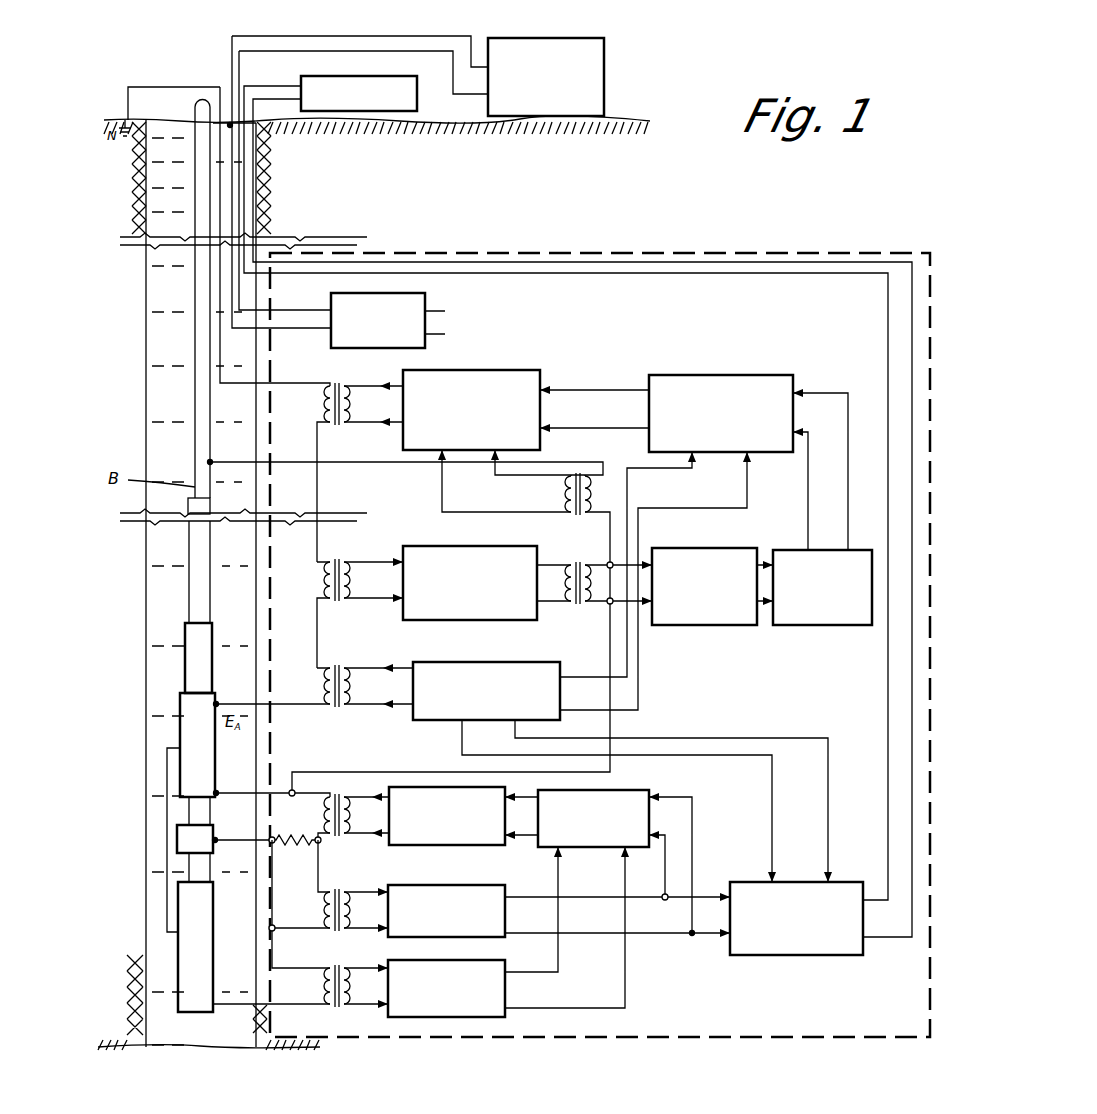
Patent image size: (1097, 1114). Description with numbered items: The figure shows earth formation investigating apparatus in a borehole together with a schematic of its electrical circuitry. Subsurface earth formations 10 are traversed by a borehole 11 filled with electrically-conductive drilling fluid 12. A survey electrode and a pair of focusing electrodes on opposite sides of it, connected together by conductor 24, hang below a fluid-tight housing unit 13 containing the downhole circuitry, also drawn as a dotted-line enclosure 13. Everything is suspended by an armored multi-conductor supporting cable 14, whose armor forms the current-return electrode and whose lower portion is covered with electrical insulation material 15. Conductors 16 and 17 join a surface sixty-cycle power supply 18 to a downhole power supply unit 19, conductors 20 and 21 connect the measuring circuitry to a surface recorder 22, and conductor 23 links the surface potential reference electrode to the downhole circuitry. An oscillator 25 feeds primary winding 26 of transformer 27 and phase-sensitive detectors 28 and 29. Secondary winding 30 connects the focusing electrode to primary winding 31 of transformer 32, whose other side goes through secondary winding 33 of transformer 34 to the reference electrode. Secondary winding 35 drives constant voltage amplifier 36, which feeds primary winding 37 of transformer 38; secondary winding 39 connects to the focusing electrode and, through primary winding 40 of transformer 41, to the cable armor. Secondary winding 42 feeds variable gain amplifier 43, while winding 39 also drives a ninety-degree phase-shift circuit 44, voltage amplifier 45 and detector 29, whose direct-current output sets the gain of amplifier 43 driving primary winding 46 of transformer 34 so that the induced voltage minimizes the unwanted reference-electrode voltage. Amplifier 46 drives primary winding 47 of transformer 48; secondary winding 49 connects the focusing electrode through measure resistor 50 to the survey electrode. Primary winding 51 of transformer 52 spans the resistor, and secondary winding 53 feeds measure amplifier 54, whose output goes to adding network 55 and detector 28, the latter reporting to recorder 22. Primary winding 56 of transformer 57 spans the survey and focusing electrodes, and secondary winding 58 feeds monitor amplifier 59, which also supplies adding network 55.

The subsurface earth formations 10 is at (302, 228).
The borehole 11 is at (146, 214).
The drilling fluid 12 is at (183, 340).
The fluid-tight housing unit 13 is at (633, 252).
The armored multi-conductor supporting cable 14 is at (195, 415).
The electrical insulation material 15 is at (189, 554).
The conductor 16 is at (336, 36).
The conductor 17 is at (460, 94).
The 60-cycle power supply 18 is at (605, 72).
The downhole power supply unit 19 is at (420, 292).
The conductor 20 is at (253, 147).
The conductor 21 is at (244, 172).
The recorder 22 is at (340, 76).
The conductor 23 is at (221, 197).
The conductor 24 is at (167, 865).
The oscillator 25 is at (487, 662).
The primary winding 26 is at (357, 688).
The transformer 27 is at (338, 660).
The phase-sensitive detector 28 is at (795, 957).
The phase-sensitive detector 29 is at (718, 372).
The secondary winding 30 is at (323, 704).
The primary winding 31 is at (323, 588).
The transformer 32 is at (340, 550).
The secondary winding 33 is at (326, 416).
The transformer 34 is at (352, 453).
The secondary winding 35 is at (357, 580).
The constant voltage amplifier 36 is at (487, 546).
The primary winding 37 is at (568, 604).
The transformer 38 is at (577, 555).
The secondary winding 39 is at (603, 590).
The primary winding 40 is at (598, 498).
The transformer 41 is at (580, 472).
The secondary winding 42 is at (562, 494).
The variable gain amplifier 43 is at (470, 370).
The 90° phase-shift circuit 44 is at (705, 625).
The voltage amplifier 45 is at (820, 625).
The amplifier 46 is at (363, 404).
The primary winding 47 is at (355, 816).
The transformer 48 is at (340, 790).
The secondary winding 49 is at (323, 804).
The measure resistor 50 is at (294, 852).
The primary winding 51 is at (314, 905).
The transformer 52 is at (340, 885).
The secondary winding 53 is at (352, 917).
The measure amplifier 54 is at (455, 885).
The adding network 55 is at (635, 792).
The primary winding 56 is at (318, 988).
The transformer 57 is at (335, 968).
The secondary winding 58 is at (352, 992).
The monitor amplifier 59 is at (487, 960).